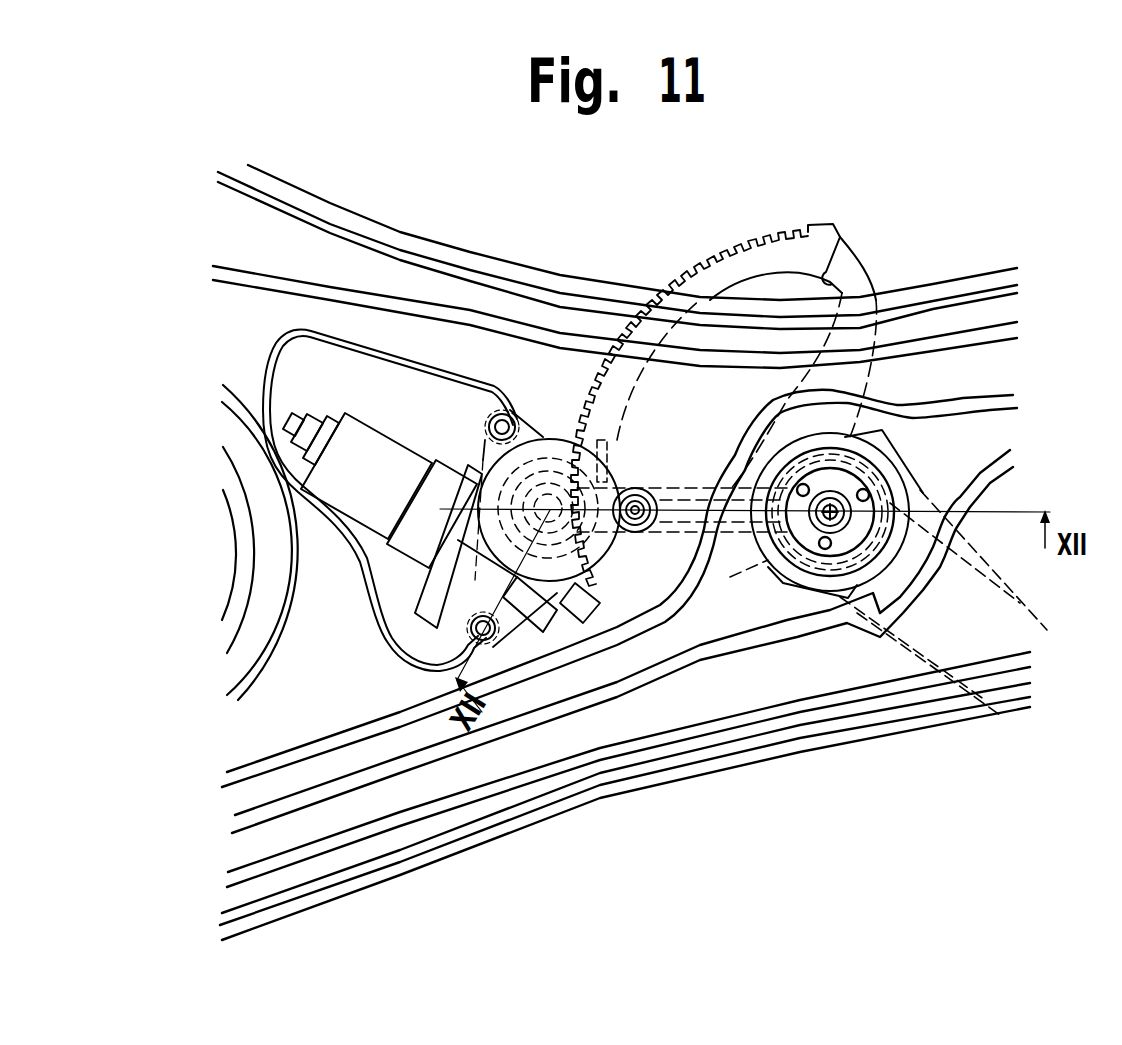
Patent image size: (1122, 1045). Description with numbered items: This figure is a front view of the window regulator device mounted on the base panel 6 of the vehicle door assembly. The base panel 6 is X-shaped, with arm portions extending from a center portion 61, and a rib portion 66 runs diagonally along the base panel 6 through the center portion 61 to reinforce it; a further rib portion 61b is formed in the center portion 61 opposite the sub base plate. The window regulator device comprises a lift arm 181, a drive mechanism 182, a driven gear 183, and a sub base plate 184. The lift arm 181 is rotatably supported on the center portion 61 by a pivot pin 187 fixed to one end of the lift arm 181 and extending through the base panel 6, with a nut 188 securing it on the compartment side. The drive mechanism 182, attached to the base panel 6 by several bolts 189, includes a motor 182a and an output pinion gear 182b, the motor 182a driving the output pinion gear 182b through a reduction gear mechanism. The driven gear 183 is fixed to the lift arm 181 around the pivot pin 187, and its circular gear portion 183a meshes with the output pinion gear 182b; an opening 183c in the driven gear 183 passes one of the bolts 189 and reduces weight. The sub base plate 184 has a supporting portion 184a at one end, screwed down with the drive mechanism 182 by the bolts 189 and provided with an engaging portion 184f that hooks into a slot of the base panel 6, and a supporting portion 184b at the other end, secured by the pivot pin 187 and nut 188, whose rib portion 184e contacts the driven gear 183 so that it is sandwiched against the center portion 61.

The base panel 6 is at (453, 240).
The center portion 61 is at (815, 690).
The rib portion 61b is at (602, 440).
The rib portion 66 is at (920, 437).
The lift arm 181 is at (1020, 632).
The drive mechanism 182 is at (368, 412).
The motor 182a is at (340, 462).
The output pinion gear 182b is at (550, 520).
The driven gear 183 is at (878, 266).
The circular gear portion 183a is at (740, 233).
The opening 183c is at (841, 237).
The sub base plate 184 is at (677, 480).
The supporting portion 184a is at (540, 508).
The supporting portion 184b is at (808, 530).
The rib portion 184e is at (880, 507).
The engaging portion 184f is at (500, 637).
The pivot pin 187 is at (870, 553).
The nut 188 is at (837, 525).
The bolts 189 is at (503, 414).